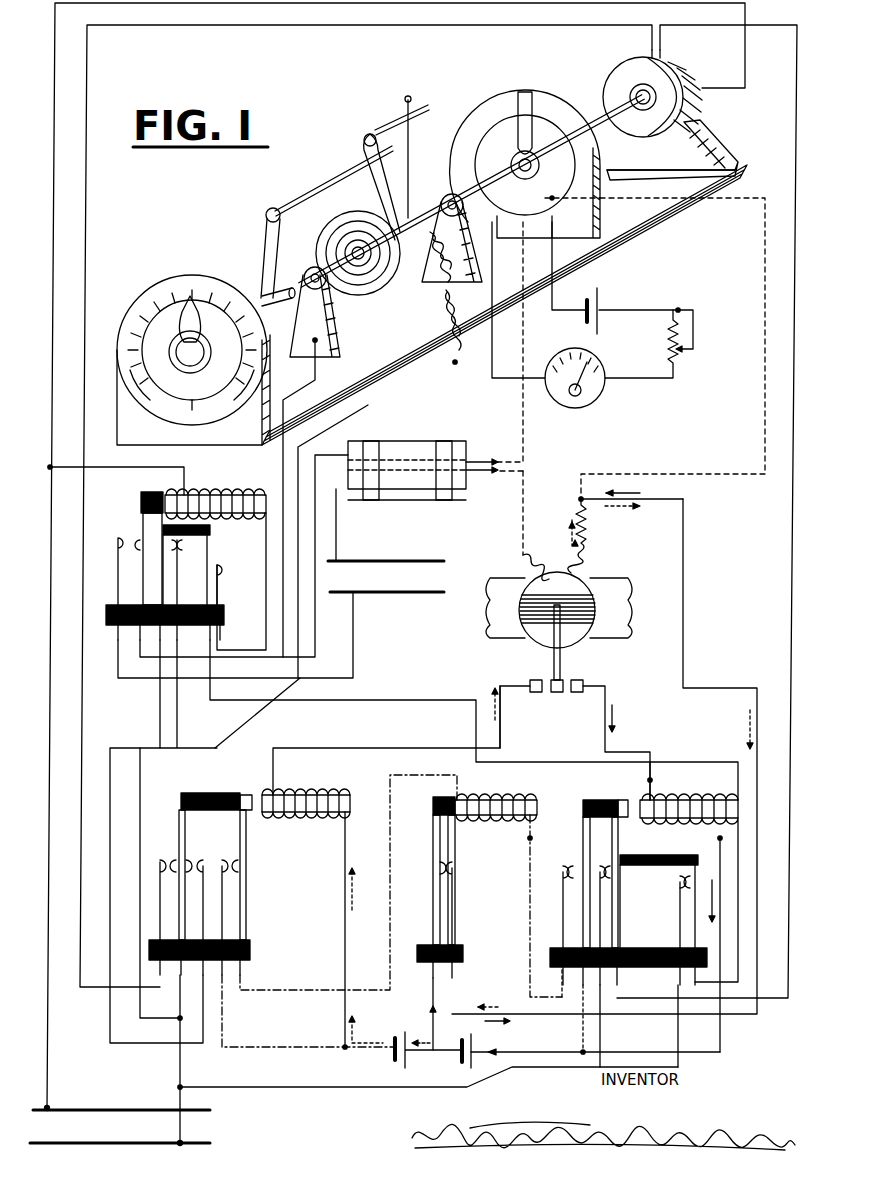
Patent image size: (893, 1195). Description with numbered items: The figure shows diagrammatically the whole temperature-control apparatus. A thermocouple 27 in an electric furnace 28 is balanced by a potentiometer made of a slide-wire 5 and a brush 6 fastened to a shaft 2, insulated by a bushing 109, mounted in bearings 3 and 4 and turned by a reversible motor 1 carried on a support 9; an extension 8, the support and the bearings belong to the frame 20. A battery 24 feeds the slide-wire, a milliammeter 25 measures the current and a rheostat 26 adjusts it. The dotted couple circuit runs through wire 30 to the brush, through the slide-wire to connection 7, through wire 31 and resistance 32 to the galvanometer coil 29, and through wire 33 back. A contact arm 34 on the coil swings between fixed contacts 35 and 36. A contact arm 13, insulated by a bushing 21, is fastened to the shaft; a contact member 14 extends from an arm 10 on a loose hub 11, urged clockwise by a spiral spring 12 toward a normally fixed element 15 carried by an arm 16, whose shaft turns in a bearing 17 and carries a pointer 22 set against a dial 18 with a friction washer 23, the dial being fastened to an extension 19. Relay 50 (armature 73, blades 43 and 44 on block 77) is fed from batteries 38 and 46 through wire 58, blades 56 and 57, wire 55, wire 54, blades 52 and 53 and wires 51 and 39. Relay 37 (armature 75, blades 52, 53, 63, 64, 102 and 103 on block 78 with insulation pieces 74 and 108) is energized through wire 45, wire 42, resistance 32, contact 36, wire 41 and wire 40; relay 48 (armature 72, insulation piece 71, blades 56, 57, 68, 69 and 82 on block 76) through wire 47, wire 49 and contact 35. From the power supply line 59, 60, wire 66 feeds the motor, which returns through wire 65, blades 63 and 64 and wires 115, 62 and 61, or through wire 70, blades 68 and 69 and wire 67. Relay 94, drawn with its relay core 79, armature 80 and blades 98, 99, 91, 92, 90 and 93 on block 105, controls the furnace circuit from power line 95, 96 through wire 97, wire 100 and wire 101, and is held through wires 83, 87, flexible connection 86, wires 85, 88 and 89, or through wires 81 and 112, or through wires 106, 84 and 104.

The reversible motor 1 is at (618, 76).
The shaft 2 is at (621, 107).
The bearing 3 is at (465, 231).
The bearing 4 is at (342, 312).
The slide-wire 5 is at (574, 131).
The slide-wire brush 6 is at (518, 126).
The slide-wire connection 7 is at (560, 197).
The extension 8 is at (458, 133).
The motor support 9 is at (705, 136).
The arm 10 is at (362, 146).
The hub 11 is at (350, 250).
The spiral wire spring 12 is at (350, 216).
The contact arm 13 is at (410, 171).
The contact member 14 is at (385, 121).
The normally fixed element 15 is at (326, 178).
The arm 16 is at (268, 243).
The bearing 17 is at (258, 290).
The dial 18 is at (153, 406).
The extension 19 is at (118, 376).
The general supporting frame 20 is at (620, 239).
The insulation bushing 21 is at (430, 276).
The pointer 22 is at (184, 322).
The friction washer 23 is at (188, 372).
The battery 24 is at (589, 312).
The milliammeter 25 is at (598, 392).
The rheostat 26 is at (668, 349).
The thermocouple 27 is at (421, 461).
The electric furnace 28 is at (420, 492).
The galvanometer coil 29 is at (535, 628).
The wire 30 is at (522, 395).
The wire 31 is at (764, 373).
The resistance 32 is at (585, 535).
The wire 33 is at (522, 505).
The contact arm 34 is at (562, 660).
The fixed contact piece 35 is at (535, 694).
The fixed contact piece 36 is at (577, 694).
The relay 37 is at (700, 821).
The battery 38 is at (462, 1062).
The wire 39 is at (540, 1052).
The wire 40 is at (722, 1050).
The wire 41 is at (606, 730).
The wire 42 is at (684, 655).
The contact blade 43 is at (455, 905).
The contact blade 44 is at (434, 914).
The wire 45 is at (432, 1020).
The battery 46 is at (394, 1058).
The wire 47 is at (345, 931).
The relay 48 is at (318, 813).
The wire 49 is at (345, 748).
The relay 50 is at (495, 818).
The wire 51 is at (583, 1023).
The contact blade 52 is at (562, 890).
The contact blade 53 is at (562, 912).
The wire 54 is at (528, 952).
The wire 55 is at (356, 905).
The contact blade 56 is at (246, 867).
The contact blade 57 is at (224, 896).
The wire 58 is at (295, 1047).
The power supply line 59 is at (90, 1110).
The power supply line 60 is at (130, 1144).
The wire 61 is at (180, 1122).
The wire 62 is at (390, 1088).
The contact blade 63 is at (605, 891).
The contact blade 64 is at (618, 918).
The wire 65 is at (726, 28).
The wire 66 is at (478, 6).
The wire 67 is at (180, 1068).
The contact blade 68 is at (188, 860).
The contact blade 69 is at (158, 866).
The wire 70 is at (585, 25).
The insulation piece 71 is at (222, 793).
The relay armature 72 is at (245, 795).
The relay armature 73 is at (435, 798).
The insulation piece 74 is at (600, 800).
The relay armature 75 is at (626, 804).
The insulation block 76 is at (252, 950).
The insulation block 77 is at (464, 953).
The insulation block 78 is at (553, 966).
The relay magnet 79 is at (141, 494).
The relay armature 80 is at (170, 500).
The wire 81 is at (158, 690).
The contact blade 82 is at (208, 862).
The wire 83 is at (110, 796).
The wire 84 is at (210, 698).
The wire 85 is at (294, 398).
The flexible connection 86 is at (443, 330).
The wire 87 is at (350, 418).
The wire 88 is at (258, 514).
The wire 89 is at (140, 467).
The contact blade 90 is at (220, 548).
The contact blade 91 is at (180, 546).
The contact blade 92 is at (178, 592).
The contact blade 93 is at (222, 601).
The relay 94 is at (232, 492).
The power line 95 is at (394, 561).
The power line 96 is at (394, 594).
The wire 97 is at (355, 662).
The contact blade 98 is at (116, 556).
The contact blade 99 is at (140, 570).
The wire 100 is at (316, 644).
The wire 101 is at (337, 533).
The contact blade 102 is at (677, 882).
The contact blade 103 is at (678, 905).
The wire 104 is at (296, 686).
The insulation block 105 is at (106, 623).
The wire 106 is at (680, 1055).
The insulation piece 108 is at (648, 855).
The insulation bushing 109 is at (539, 167).
The wire 112 is at (179, 644).
The wire 115 is at (601, 1025).